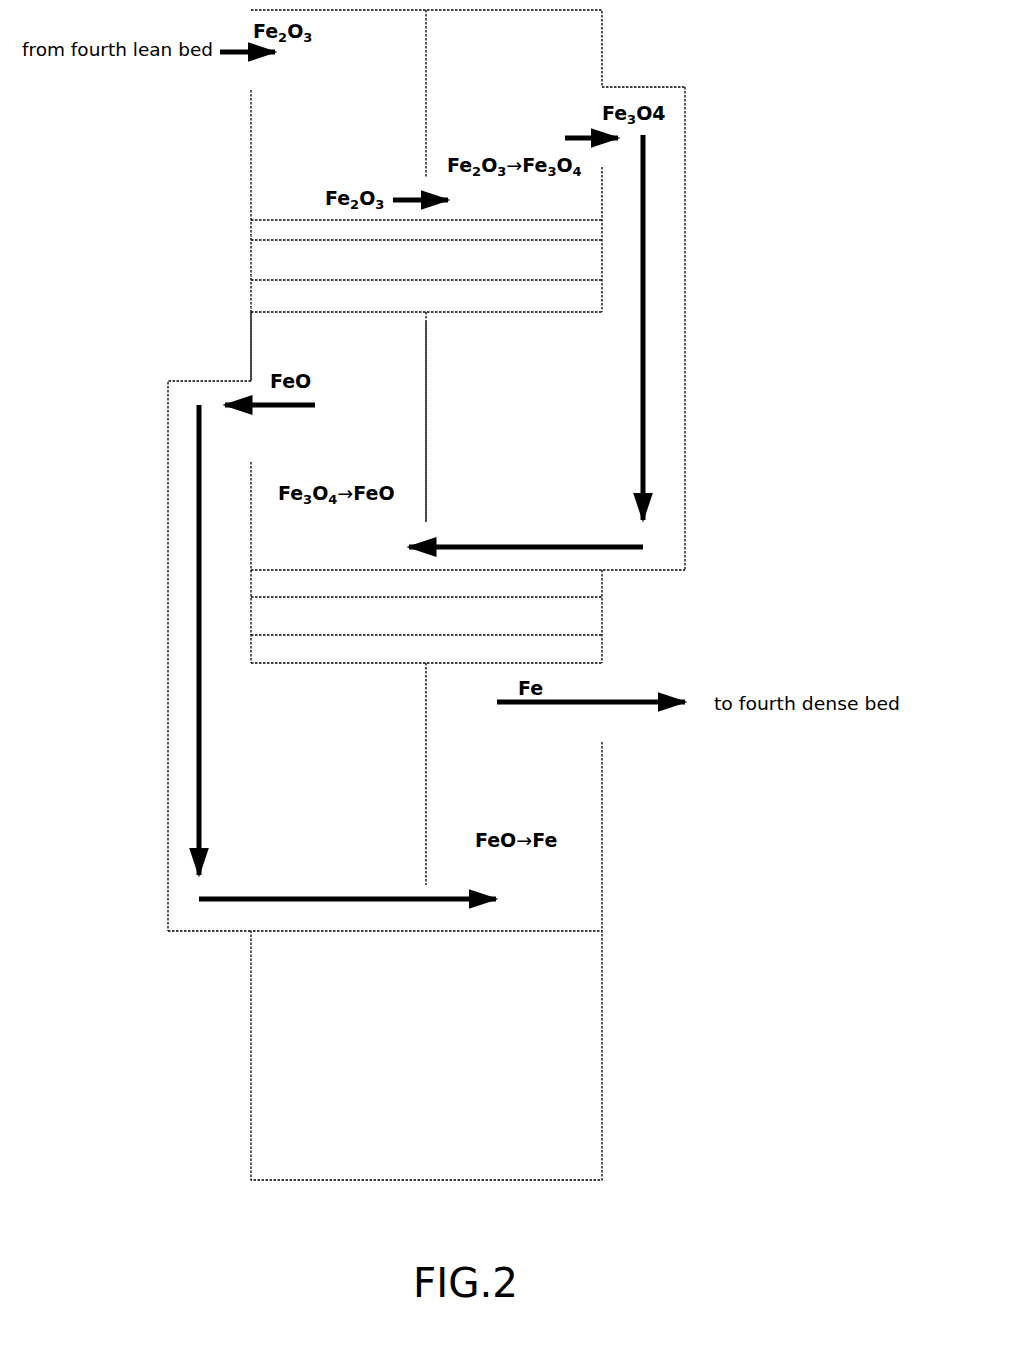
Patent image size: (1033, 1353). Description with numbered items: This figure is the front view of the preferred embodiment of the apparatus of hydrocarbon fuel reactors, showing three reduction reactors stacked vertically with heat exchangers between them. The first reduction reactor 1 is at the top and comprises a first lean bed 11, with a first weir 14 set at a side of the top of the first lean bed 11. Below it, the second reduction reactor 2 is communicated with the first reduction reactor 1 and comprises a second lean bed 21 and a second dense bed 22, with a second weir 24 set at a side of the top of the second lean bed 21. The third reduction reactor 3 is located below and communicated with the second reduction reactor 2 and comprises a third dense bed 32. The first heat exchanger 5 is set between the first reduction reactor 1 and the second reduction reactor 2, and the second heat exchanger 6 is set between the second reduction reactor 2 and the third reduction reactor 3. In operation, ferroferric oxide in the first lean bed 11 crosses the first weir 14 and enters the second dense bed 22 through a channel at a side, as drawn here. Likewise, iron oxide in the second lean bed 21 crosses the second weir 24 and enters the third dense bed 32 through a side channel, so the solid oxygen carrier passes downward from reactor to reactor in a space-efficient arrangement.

The first reduction reactor 1 is at (185, 118).
The second reduction reactor 2 is at (185, 335).
The third reduction reactor 3 is at (612, 822).
The first heat exchanger 5 is at (603, 258).
The second heat exchanger 6 is at (602, 615).
The first lean bed 11 is at (583, 50).
The first weir 14 is at (603, 155).
The second lean bed 21 is at (275, 335).
The second dense bed 22 is at (553, 375).
The second weir 24 is at (250, 437).
The third dense bed 32 is at (297, 733).